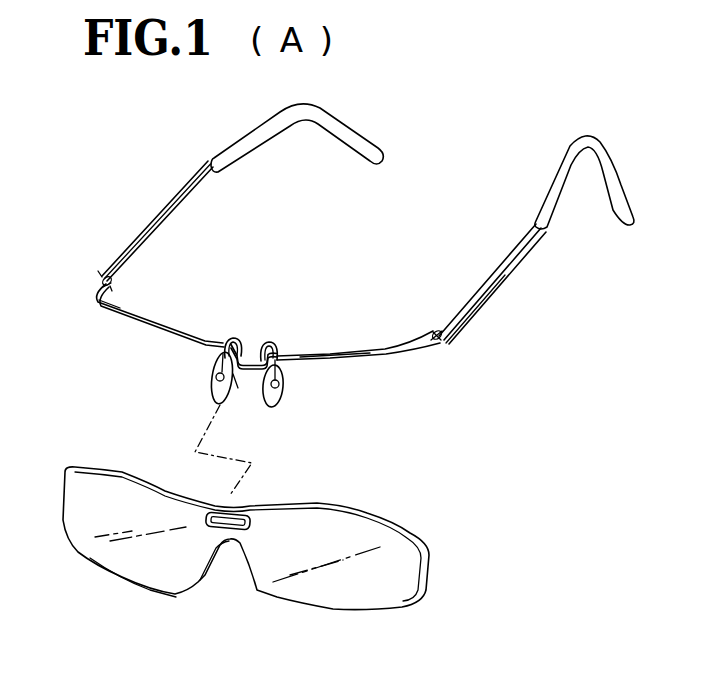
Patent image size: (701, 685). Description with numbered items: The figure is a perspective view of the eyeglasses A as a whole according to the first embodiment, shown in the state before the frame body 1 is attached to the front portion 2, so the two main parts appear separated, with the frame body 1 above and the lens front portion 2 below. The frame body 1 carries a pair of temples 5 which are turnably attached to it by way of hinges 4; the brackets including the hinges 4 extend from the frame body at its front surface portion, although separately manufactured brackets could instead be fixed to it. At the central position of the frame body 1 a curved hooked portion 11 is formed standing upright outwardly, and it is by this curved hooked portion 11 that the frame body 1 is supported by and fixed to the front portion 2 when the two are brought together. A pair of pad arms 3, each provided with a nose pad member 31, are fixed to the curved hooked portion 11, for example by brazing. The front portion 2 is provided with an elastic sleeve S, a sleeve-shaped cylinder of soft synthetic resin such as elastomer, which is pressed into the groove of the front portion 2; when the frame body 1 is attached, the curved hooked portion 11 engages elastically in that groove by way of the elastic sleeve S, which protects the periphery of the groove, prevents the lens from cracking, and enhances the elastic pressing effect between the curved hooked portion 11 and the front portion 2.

The eyeglasses A is at (463, 148).
The frame body 1 is at (315, 355).
The curved hooked portion 11 is at (243, 372).
The pad arms 3 is at (233, 338).
The nose pad members 31 is at (282, 399).
The hinges 4 is at (434, 333).
The temples 5 is at (489, 297).
The front portion 2 is at (365, 594).
The elastic sleeve S is at (231, 537).